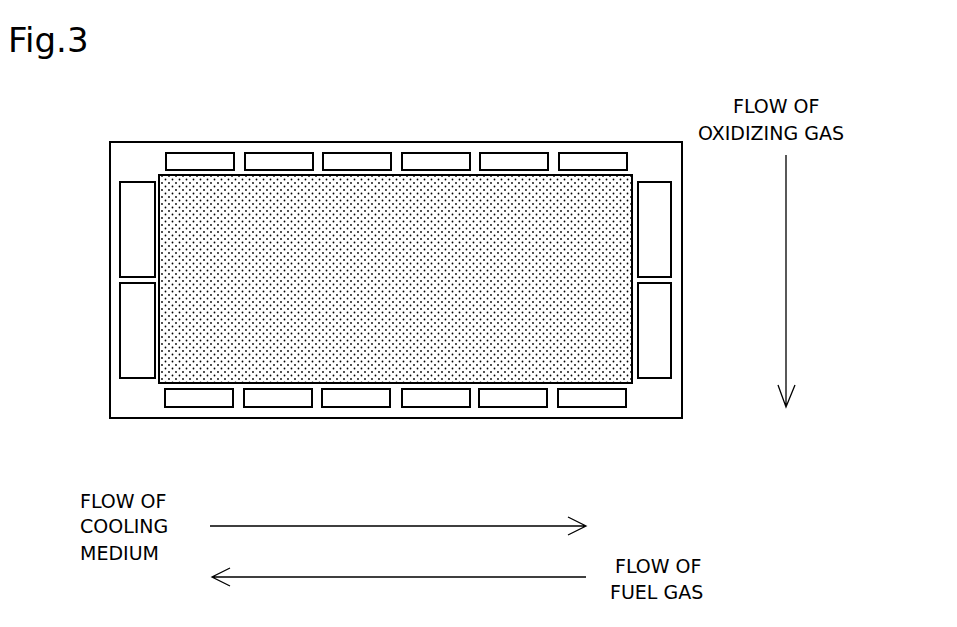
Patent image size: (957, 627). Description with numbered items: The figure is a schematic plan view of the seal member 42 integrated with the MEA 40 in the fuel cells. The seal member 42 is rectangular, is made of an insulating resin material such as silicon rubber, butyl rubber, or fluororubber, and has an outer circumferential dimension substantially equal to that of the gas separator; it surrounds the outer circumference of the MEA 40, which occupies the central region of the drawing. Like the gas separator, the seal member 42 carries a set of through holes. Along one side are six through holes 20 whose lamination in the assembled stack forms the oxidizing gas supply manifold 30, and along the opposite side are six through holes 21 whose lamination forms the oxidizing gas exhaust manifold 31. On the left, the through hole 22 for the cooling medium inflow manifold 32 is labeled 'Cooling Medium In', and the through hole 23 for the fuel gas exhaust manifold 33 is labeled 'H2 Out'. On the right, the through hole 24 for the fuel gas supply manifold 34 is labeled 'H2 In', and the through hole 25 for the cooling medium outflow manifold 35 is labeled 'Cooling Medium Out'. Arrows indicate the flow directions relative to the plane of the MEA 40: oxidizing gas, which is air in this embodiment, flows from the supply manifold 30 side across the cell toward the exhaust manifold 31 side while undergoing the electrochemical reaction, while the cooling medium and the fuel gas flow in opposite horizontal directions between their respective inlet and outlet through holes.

The through holes 20 is at (396, 126).
The oxidizing gas supply manifold 30 is at (353, 160).
The through holes 21 is at (395, 434).
The oxidizing gas exhaust manifold 31 is at (435, 398).
The through hole 22 is at (88, 232).
The cooling medium inflow manifold 32 is at (120, 252).
The through hole 23 is at (88, 334).
The fuel gas exhaust manifold 33 is at (120, 355).
The through hole 24 is at (700, 235).
The fuel gas supply manifold 34 is at (671, 253).
The through hole 25 is at (700, 335).
The cooling medium outflow manifold 35 is at (671, 353).
The MEA 40 is at (395, 279).
The seal member 42 is at (658, 165).